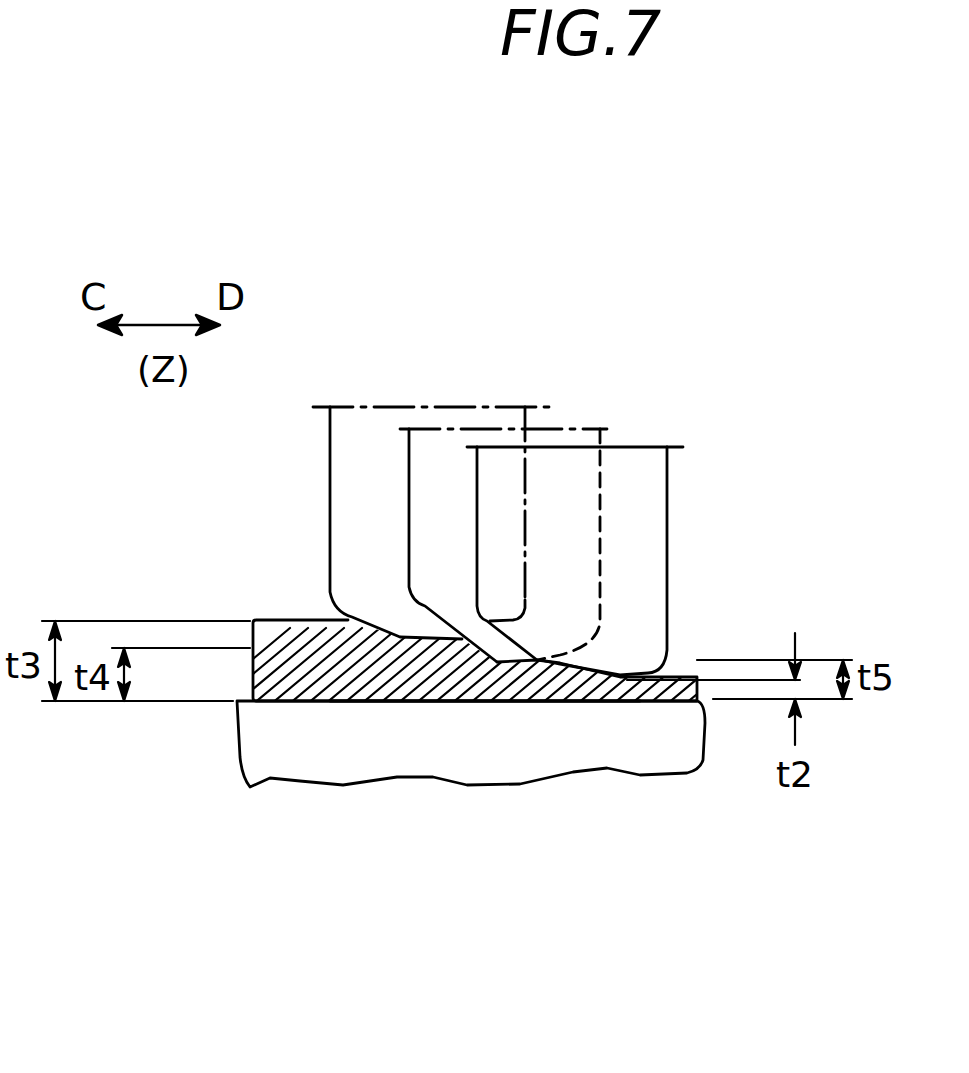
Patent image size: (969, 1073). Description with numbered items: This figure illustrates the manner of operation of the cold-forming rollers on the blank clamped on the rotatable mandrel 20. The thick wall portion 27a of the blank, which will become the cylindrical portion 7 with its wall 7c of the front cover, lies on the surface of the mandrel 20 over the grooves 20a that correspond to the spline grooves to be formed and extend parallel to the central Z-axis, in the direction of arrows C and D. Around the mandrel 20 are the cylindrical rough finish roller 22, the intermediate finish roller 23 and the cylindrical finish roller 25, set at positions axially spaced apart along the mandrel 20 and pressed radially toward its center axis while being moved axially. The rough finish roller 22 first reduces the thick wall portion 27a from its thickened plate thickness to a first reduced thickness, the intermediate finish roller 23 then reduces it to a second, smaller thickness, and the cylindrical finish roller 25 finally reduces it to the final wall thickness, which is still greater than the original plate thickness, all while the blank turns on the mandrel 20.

The cylindrical portion 7 is at (487, 579).
The cylindrical portion wall 7c is at (487, 579).
The thick-wall portion 27a is at (295, 640).
The rough finish roller 22 is at (502, 413).
The intermediate finish roller 23 is at (570, 442).
The cylindrical finish roller 25 is at (647, 462).
The mandrel 20 is at (628, 752).
The grooves 20a is at (483, 702).